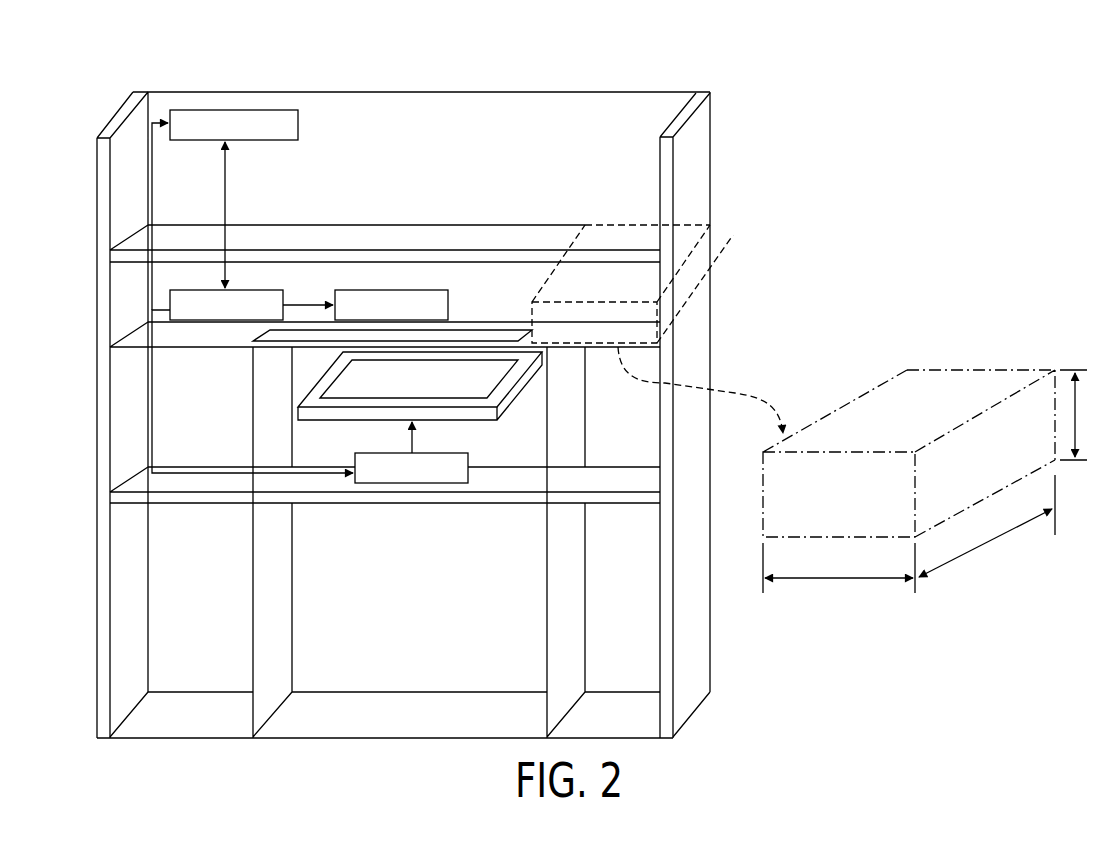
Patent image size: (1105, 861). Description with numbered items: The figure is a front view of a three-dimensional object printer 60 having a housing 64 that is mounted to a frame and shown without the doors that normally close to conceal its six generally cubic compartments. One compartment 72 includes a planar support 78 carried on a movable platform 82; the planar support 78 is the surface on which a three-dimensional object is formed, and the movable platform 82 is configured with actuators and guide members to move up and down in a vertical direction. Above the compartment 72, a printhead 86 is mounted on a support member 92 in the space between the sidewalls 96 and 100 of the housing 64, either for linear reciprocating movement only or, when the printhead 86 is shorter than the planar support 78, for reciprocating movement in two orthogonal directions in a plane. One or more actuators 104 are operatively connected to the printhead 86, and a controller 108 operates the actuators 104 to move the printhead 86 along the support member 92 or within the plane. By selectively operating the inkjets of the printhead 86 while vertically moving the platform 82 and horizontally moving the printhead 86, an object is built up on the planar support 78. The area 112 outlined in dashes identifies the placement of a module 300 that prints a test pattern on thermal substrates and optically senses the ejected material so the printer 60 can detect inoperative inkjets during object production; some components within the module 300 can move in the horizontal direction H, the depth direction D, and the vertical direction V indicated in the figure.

The printer 60 is at (156, 80).
The housing 64 is at (693, 340).
The compartment 72 is at (318, 446).
The planar support 78 is at (419, 379).
The movable platform 82 is at (439, 388).
The printhead 86 is at (449, 296).
The support member 92 is at (187, 348).
The sidewall 96 is at (97, 213).
The sidewall 100 is at (713, 113).
The actuators 104 is at (287, 300).
The controller 108 is at (300, 127).
The area 112 is at (643, 275).
The module 300 is at (927, 368).